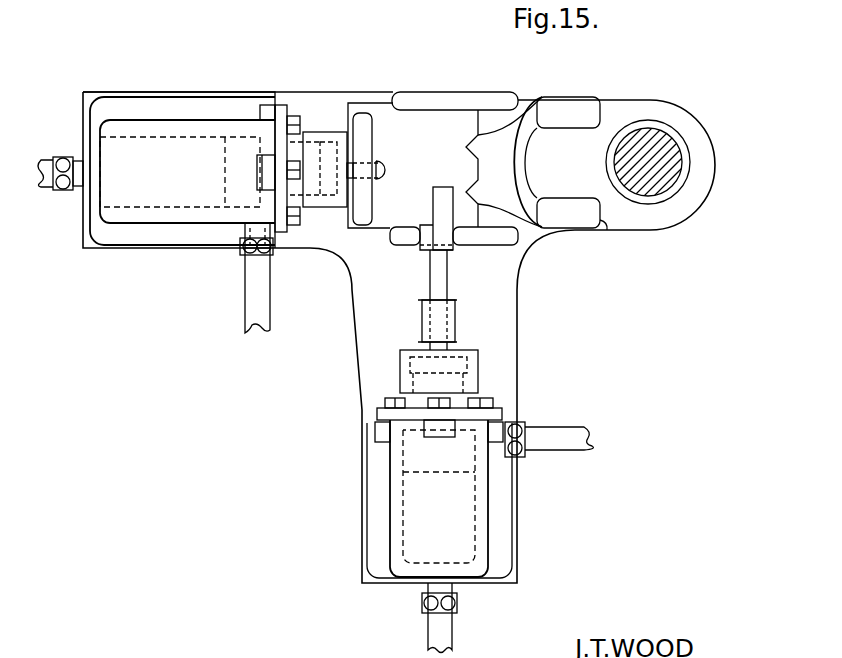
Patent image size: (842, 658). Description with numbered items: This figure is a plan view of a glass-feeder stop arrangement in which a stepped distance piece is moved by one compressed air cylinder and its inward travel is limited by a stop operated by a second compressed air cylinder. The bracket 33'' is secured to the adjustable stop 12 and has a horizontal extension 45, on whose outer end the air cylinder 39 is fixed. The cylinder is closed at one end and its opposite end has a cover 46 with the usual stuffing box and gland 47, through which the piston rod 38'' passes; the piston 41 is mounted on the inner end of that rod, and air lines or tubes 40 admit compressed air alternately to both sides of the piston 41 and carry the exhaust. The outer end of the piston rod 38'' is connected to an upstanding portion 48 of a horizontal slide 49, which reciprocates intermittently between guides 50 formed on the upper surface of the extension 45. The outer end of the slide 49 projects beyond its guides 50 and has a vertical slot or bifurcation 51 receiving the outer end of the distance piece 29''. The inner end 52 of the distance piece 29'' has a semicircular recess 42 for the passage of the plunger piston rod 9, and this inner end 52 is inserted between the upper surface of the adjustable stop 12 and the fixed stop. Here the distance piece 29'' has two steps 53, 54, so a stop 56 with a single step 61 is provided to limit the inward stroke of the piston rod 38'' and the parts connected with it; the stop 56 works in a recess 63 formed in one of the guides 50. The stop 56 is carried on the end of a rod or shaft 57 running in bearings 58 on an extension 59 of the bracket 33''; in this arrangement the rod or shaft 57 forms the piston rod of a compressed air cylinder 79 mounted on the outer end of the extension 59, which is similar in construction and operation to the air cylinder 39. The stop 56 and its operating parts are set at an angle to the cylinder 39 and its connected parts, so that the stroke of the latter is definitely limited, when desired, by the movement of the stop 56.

The plunger piston rod 9 is at (668, 188).
The adjustable stop 12 is at (677, 136).
The distance piece 29'' is at (510, 162).
The bracket 33'' is at (734, 164).
The piston rod 38'' is at (345, 140).
The air cylinder 39 is at (125, 120).
The air lines or tubes 40 is at (42, 160).
The piston 41 is at (222, 174).
The recess 42 is at (537, 162).
The horizontal extension 45 is at (86, 248).
The cover 46 is at (280, 107).
The stuffing box and gland 47 is at (327, 209).
The upstanding portion 48 is at (362, 118).
The horizontal slide 49 is at (413, 165).
The guides 50 is at (452, 97).
The vertical slot or bifurcation 51 is at (466, 148).
The inner end 52 is at (607, 222).
The step 53 is at (588, 112).
The step 54 is at (530, 115).
The stop 56 is at (452, 236).
The rod or shaft 57 is at (448, 293).
The bearings 58 is at (420, 325).
The extension 59 is at (365, 585).
The step 61 is at (432, 204).
The recess 63 is at (411, 238).
The compressed air cylinder 79 is at (490, 530).